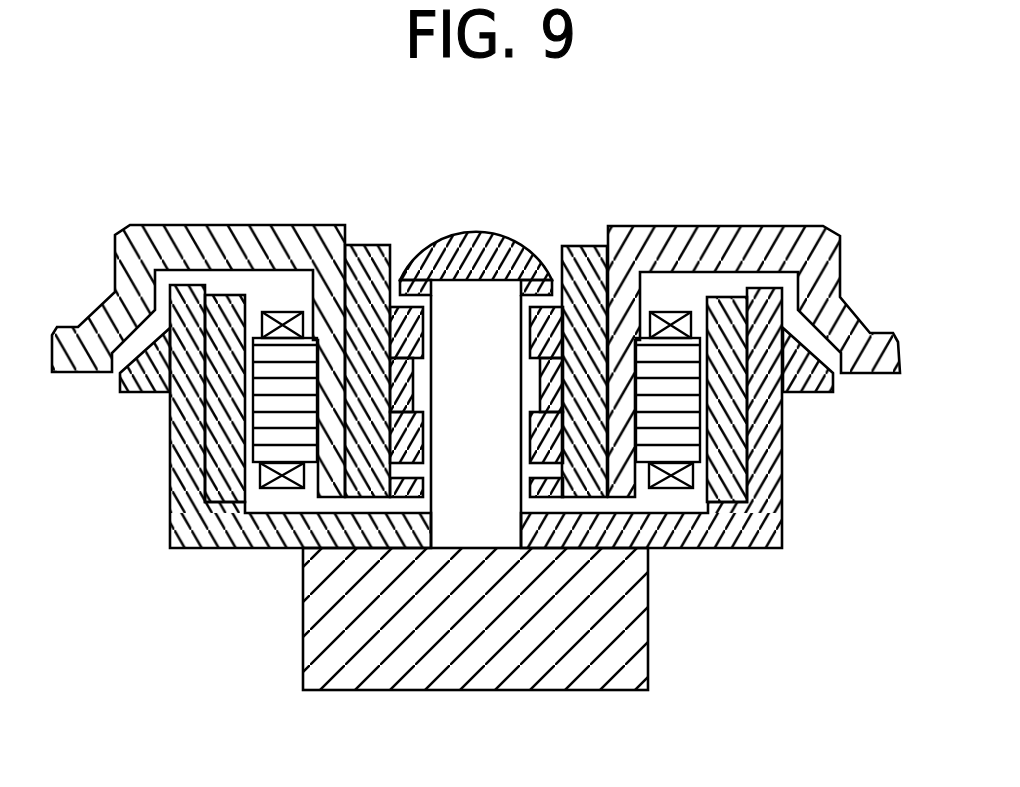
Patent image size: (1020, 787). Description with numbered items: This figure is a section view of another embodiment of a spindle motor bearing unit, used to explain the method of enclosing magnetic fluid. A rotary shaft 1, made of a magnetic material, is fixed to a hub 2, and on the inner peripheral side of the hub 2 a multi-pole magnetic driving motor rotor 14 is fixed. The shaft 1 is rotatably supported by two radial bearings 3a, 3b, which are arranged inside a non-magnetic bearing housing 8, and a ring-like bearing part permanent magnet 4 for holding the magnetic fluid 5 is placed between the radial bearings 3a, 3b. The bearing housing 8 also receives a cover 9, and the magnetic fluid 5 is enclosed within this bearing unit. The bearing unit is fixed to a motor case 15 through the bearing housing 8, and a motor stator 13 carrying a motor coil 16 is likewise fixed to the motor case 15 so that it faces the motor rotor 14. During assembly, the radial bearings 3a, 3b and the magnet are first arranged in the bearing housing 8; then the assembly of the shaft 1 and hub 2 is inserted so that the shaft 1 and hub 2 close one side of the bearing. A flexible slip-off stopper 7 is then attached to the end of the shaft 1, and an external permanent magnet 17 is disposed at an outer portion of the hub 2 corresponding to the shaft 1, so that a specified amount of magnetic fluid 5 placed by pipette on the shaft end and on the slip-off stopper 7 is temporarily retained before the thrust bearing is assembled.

The shaft 1 is at (480, 533).
The hub 2 is at (620, 540).
The radial bearing 3a is at (403, 433).
The radial bearing 3b is at (410, 313).
The bearing part permanent magnet 4 is at (548, 383).
The magnetic fluid 5 is at (503, 237).
The slip-off stopper 7 is at (542, 282).
The bearing housing 8 is at (587, 267).
The cover 9 is at (550, 490).
The motor stator 13 is at (270, 435).
The motor rotor 14 is at (725, 428).
The motor case 15 is at (813, 258).
The motor coil 16 is at (282, 488).
The external permanent magnet 17 is at (627, 657).